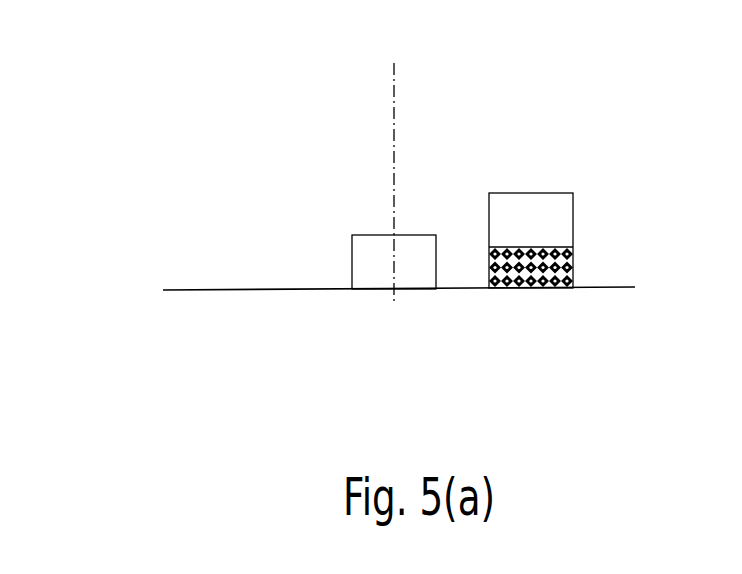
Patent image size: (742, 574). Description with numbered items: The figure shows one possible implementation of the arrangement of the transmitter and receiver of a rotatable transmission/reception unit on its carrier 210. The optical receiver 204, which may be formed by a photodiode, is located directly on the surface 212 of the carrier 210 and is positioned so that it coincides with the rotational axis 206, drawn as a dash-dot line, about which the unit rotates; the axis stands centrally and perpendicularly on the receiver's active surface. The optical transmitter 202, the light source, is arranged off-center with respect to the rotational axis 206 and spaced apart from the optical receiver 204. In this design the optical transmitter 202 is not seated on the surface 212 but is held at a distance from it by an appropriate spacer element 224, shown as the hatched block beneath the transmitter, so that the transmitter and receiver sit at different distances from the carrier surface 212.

The optical transmitter 202 is at (538, 208).
The optical receiver 204 is at (422, 280).
The rotational axis 206 is at (392, 99).
The carrier 210 is at (172, 291).
The surface 212 is at (595, 288).
The spacer element 224 is at (533, 290).